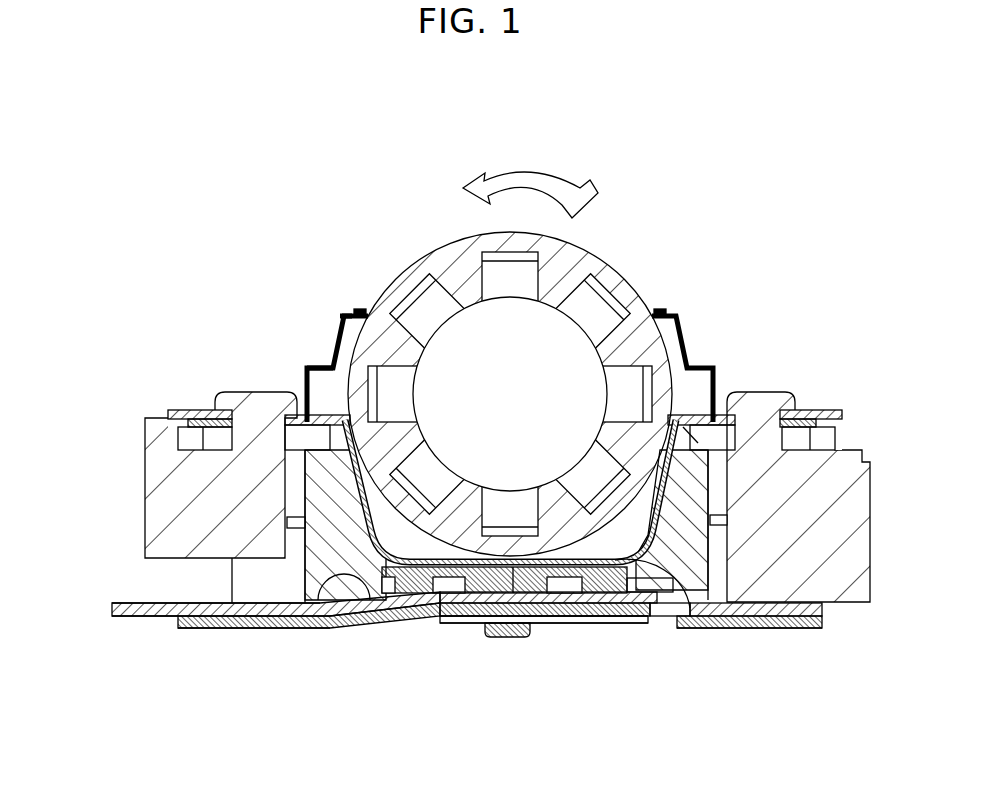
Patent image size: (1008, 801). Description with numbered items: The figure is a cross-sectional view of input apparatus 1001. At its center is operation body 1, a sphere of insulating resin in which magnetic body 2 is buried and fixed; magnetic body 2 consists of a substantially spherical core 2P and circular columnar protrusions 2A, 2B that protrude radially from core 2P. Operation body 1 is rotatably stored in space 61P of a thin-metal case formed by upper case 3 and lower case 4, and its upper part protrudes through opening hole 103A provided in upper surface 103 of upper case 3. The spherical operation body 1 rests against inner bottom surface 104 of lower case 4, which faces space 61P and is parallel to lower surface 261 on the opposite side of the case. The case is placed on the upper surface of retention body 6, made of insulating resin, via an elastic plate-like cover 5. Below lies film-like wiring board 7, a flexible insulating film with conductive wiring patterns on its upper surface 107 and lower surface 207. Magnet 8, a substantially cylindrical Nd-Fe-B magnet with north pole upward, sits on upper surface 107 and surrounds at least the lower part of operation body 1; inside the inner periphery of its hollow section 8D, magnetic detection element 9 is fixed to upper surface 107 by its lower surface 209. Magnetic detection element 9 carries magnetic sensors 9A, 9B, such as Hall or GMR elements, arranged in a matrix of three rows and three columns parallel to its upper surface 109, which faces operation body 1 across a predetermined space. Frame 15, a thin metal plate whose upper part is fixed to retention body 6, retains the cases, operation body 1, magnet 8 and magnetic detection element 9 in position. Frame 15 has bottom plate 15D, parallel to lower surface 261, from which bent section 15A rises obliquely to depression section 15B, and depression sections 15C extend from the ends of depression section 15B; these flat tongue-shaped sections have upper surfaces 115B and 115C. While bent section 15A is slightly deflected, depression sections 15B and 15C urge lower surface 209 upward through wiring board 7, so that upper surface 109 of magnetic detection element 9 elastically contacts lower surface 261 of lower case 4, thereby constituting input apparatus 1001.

The operation body 1 is at (440, 255).
The magnetic body 2 is at (526, 343).
The core 2P is at (543, 333).
The protrusion 2B is at (632, 383).
The protrusion 2A is at (697, 363).
The upper case 3 is at (305, 324).
The lower case 4 is at (368, 533).
The cover 5 is at (287, 415).
The retention body 6 is at (165, 445).
The wiring board 7 is at (120, 617).
The magnet 8 is at (199, 479).
The hollow section 8D is at (360, 520).
The magnetic detection element 9 is at (524, 641).
The magnetic sensor 9A is at (447, 585).
The magnetic sensor 9B is at (556, 585).
The frame 15 is at (775, 628).
The bent section 15A is at (438, 630).
The depression section 15B is at (626, 612).
The depression section 15C is at (407, 612).
The bottom plate 15D is at (212, 628).
The space 61P is at (343, 397).
The upper surface 103 is at (345, 318).
The opening hole 103A is at (352, 312).
The inner bottom surface 104 is at (730, 397).
The upper surface 107 is at (132, 603).
The upper surface 109 is at (690, 607).
The upper surface 115B is at (577, 622).
The upper surface 115C is at (306, 622).
The lower surface 207 is at (137, 617).
The lower surface 209 is at (492, 630).
The lower surface 261 is at (515, 622).
The input apparatus 1001 is at (758, 230).